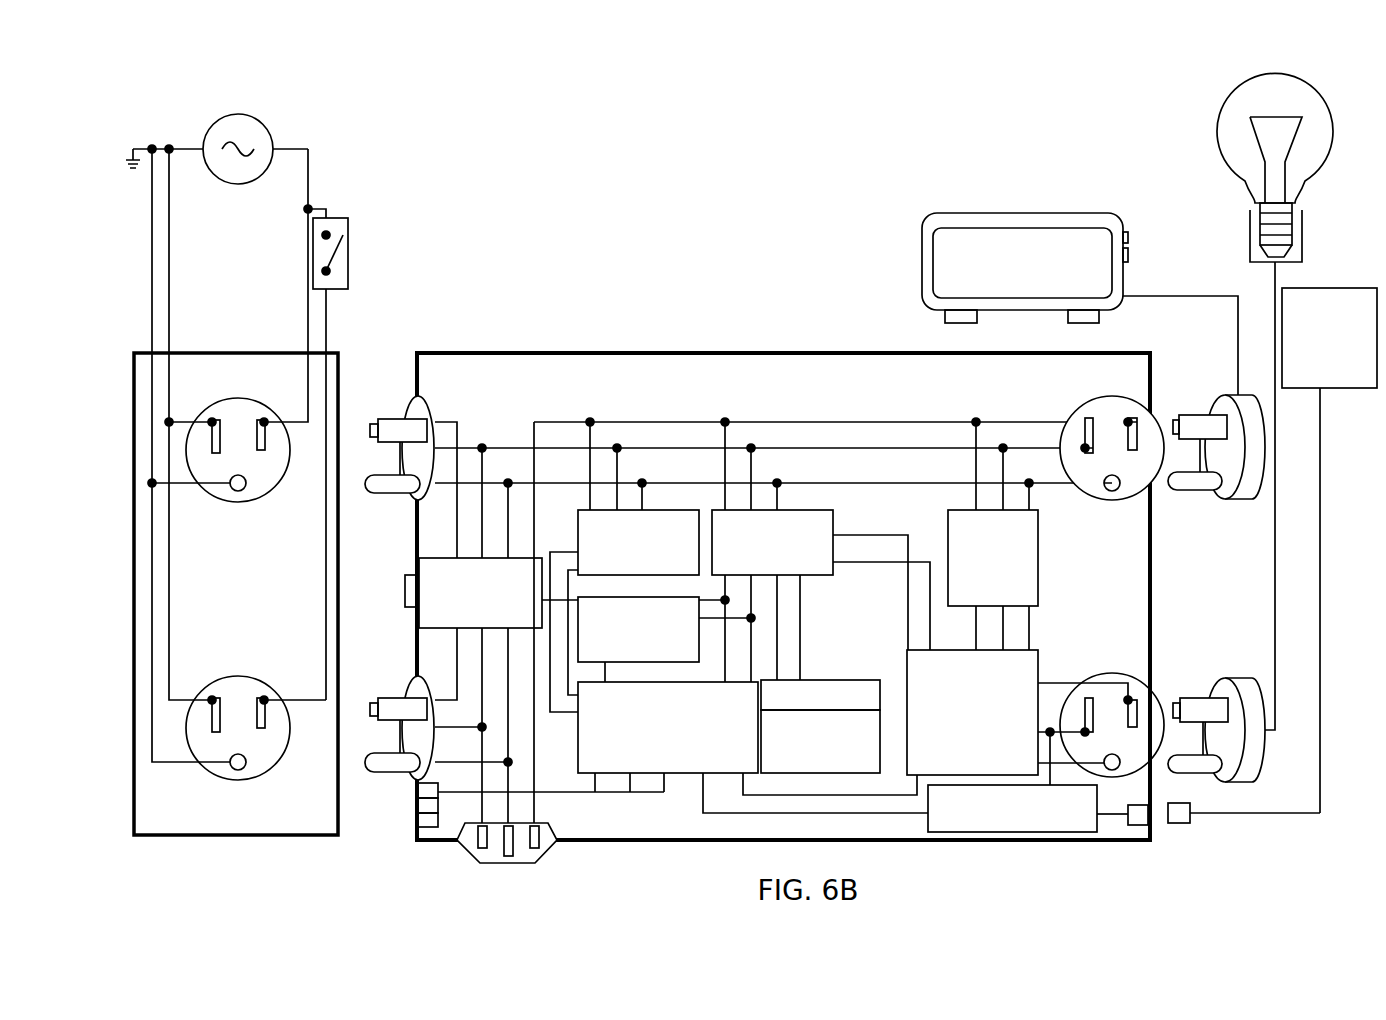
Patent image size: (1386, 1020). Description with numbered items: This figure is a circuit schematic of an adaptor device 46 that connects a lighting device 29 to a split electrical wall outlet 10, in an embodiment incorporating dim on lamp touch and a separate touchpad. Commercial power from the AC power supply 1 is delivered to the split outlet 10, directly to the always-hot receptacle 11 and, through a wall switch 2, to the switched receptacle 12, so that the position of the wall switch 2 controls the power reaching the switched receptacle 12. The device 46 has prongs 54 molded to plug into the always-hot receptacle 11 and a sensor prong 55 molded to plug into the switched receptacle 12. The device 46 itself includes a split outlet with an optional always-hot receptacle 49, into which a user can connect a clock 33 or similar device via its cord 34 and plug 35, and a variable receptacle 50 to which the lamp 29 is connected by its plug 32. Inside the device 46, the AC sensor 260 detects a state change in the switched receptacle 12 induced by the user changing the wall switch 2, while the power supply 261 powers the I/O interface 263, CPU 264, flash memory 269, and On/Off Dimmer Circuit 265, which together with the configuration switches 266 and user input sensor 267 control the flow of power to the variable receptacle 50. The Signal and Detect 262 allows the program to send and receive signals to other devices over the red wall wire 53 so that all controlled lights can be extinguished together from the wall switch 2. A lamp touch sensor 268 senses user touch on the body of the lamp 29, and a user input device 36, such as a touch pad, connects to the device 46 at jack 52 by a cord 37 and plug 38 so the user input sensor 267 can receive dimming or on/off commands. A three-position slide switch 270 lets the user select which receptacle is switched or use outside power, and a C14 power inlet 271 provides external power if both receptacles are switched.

The AC power supply 1 is at (217, 134).
The wall switch 2 is at (338, 219).
The red wall wire 53 is at (341, 494).
The split electrical wall outlet 10 is at (236, 520).
The receptacle 11 is at (238, 436).
The switched receptacle 12 is at (238, 714).
The device 46 is at (783, 580).
The prongs 54 is at (411, 473).
The sensor prong 55 is at (438, 704).
The three-position slide switch 270 is at (491, 636).
The AC sensor 260 is at (624, 567).
The power supply 261 is at (821, 552).
The Signal and Detect 262 is at (666, 628).
The I/O interface 263 is at (647, 737).
The CPU 264 is at (820, 714).
The On/Off Dimmer Circuit 265 is at (1019, 705).
The configuration switches 266 is at (504, 835).
The user input sensor 267 is at (815, 805).
The lamp touch sensor 268 is at (1016, 536).
The flash memory 269 is at (830, 785).
The C14 power inlet 271 is at (531, 836).
The always-hot receptacle 49 is at (1112, 436).
The variable receptacle 50 is at (1112, 711).
The jack 52 is at (1038, 806).
The clock 33 is at (1025, 253).
The clock power cord 34 is at (1180, 332).
The clock plug 35 is at (1216, 429).
The user input device 36 is at (1329, 322).
The cord 37 is at (1336, 600).
The plug 38 is at (1244, 824).
The lighting device 29 is at (1275, 386).
The lamp plug 32 is at (1216, 711).